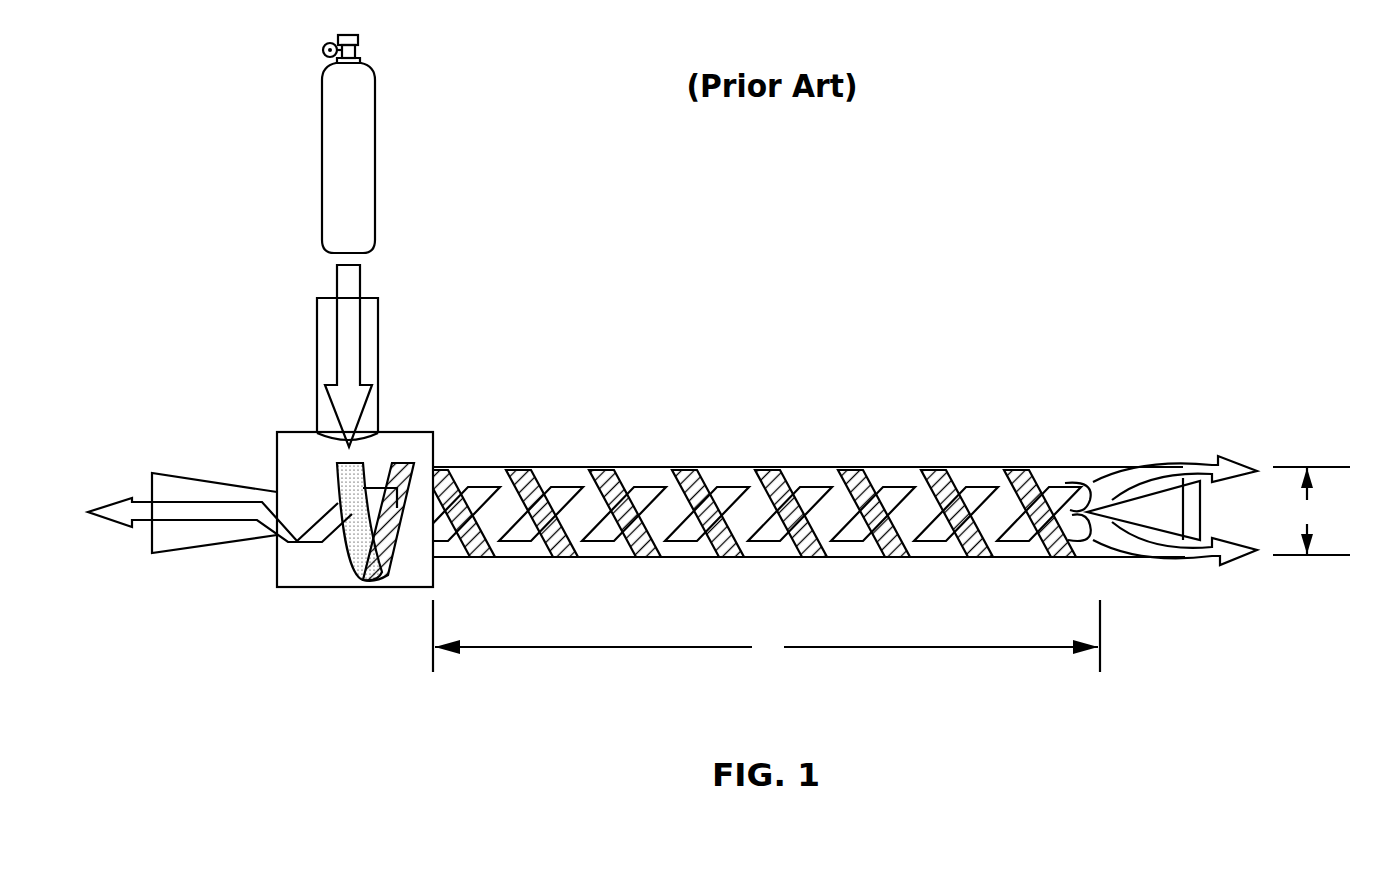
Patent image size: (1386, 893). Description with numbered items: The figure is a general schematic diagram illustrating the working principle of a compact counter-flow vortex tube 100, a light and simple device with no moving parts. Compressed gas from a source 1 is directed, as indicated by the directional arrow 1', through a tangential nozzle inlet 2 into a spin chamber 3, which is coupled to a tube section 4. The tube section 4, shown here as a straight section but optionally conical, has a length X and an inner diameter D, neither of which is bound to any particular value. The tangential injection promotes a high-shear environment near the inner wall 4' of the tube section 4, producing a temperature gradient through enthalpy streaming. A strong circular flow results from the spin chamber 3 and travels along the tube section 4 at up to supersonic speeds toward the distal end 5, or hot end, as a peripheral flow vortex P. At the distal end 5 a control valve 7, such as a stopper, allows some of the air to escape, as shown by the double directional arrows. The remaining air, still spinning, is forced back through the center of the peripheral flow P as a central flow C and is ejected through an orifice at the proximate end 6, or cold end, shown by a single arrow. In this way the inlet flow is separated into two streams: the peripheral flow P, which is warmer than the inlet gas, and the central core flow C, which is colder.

The compact counter-flow vortex tube 100 is at (607, 305).
The compressed gas source 1 is at (348, 144).
The compressed gas flow direction 1' is at (417, 356).
The inlet 2 is at (377, 351).
The spin chamber 3 is at (342, 590).
The tube section 4 is at (809, 461).
The wall 4' is at (753, 456).
The distal end 5 is at (1187, 443).
The proximate end 6 is at (152, 487).
The control valve 7 is at (1165, 513).
The peripheral flow vortex P is at (484, 572).
The central flow C is at (612, 548).
The length X is at (766, 636).
The inner diameter D is at (1311, 511).